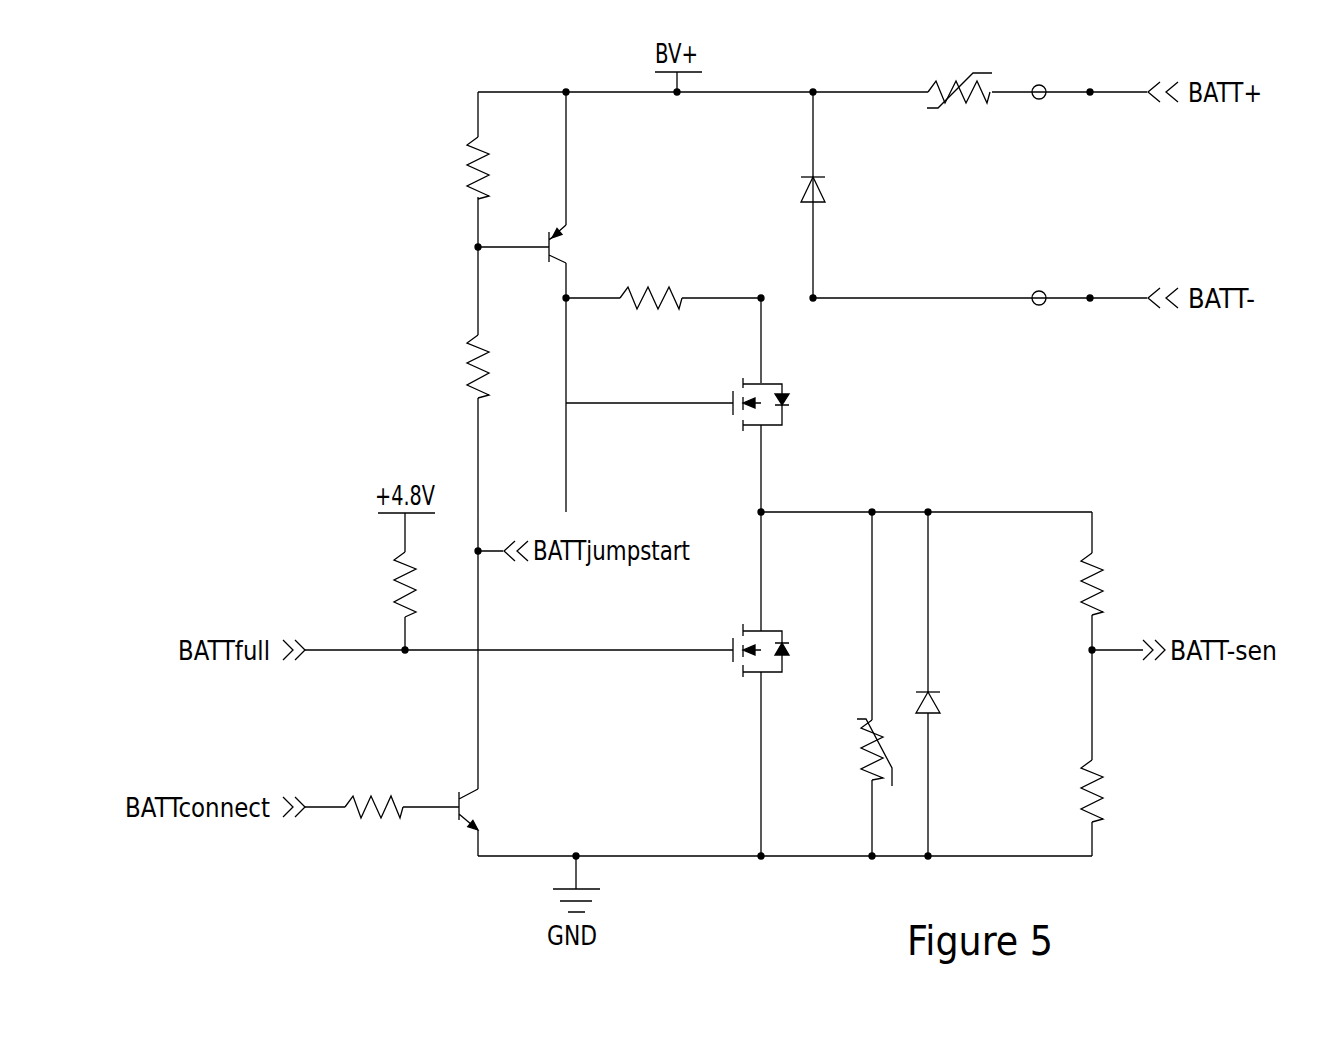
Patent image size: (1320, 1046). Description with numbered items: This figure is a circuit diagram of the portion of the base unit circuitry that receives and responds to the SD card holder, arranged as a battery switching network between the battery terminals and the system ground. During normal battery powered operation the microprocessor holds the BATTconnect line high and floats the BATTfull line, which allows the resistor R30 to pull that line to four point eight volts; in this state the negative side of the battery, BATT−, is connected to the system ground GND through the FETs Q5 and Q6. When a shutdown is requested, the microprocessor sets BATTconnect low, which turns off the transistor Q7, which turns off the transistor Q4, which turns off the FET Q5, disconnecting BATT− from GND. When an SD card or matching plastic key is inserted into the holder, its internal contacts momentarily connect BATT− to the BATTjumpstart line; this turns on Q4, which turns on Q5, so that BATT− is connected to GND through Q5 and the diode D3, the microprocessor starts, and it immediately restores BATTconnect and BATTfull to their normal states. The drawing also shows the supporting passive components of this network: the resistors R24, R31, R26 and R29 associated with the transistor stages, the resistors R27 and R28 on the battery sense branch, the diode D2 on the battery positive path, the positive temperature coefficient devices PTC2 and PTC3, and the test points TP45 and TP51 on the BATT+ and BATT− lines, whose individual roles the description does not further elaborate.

The resistor 100K R24 is at (447, 166).
The resistor 100K R31 is at (447, 365).
The transistor Q4 is at (621, 217).
The diode SSC53L D2 is at (864, 202).
The PTC fuse 4A PTC2 is at (959, 120).
The test point BATT+ TP45 is at (1074, 77).
The test point BATT- TP51 is at (1074, 284).
The resistor 100K R26 is at (663, 334).
The FET Q5 is at (688, 438).
The FET Q6 is at (694, 620).
The pull-up resistor R30 is at (380, 584).
The transistor Q7 is at (399, 793).
The resistor 100K R29 is at (374, 839).
The PTC fuse 250MA PTC3 is at (836, 756).
The diode D3 is at (969, 705).
The resistor 20K R27 is at (1066, 583).
The resistor 10K R28 is at (1066, 790).